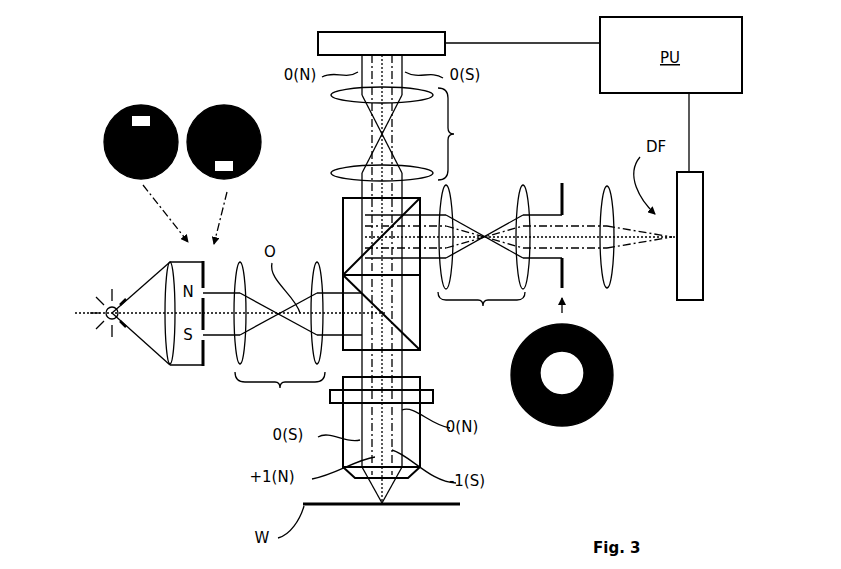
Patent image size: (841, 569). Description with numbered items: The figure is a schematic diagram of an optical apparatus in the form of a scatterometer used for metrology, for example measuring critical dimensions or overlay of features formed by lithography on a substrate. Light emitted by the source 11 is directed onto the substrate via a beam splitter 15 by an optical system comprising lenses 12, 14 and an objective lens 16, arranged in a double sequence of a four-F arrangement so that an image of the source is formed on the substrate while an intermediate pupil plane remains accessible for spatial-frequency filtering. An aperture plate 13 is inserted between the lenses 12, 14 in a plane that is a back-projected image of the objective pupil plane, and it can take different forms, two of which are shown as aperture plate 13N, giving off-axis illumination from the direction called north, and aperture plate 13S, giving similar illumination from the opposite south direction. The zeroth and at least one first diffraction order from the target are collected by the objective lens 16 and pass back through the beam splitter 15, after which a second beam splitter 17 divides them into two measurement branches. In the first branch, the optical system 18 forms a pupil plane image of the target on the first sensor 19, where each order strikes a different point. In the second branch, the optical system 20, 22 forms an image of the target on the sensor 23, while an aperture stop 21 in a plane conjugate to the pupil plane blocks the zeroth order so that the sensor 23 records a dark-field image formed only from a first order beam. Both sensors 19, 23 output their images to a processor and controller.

The source 11 is at (116, 330).
The lens 12 is at (170, 366).
The aperture plate 13 is at (203, 366).
The aperture plate 13N is at (141, 105).
The aperture plate 13S is at (225, 105).
The lens 14 is at (279, 339).
The beam splitter 15 is at (420, 325).
The objective lens 16 is at (420, 435).
The second beam splitter 17 is at (343, 230).
The optical system 18 is at (405, 134).
The first sensor 19 is at (446, 35).
The optical system 20 is at (500, 258).
The aperture stop 21 is at (562, 183).
The optical system 22 is at (607, 288).
The sensor 23 is at (703, 190).